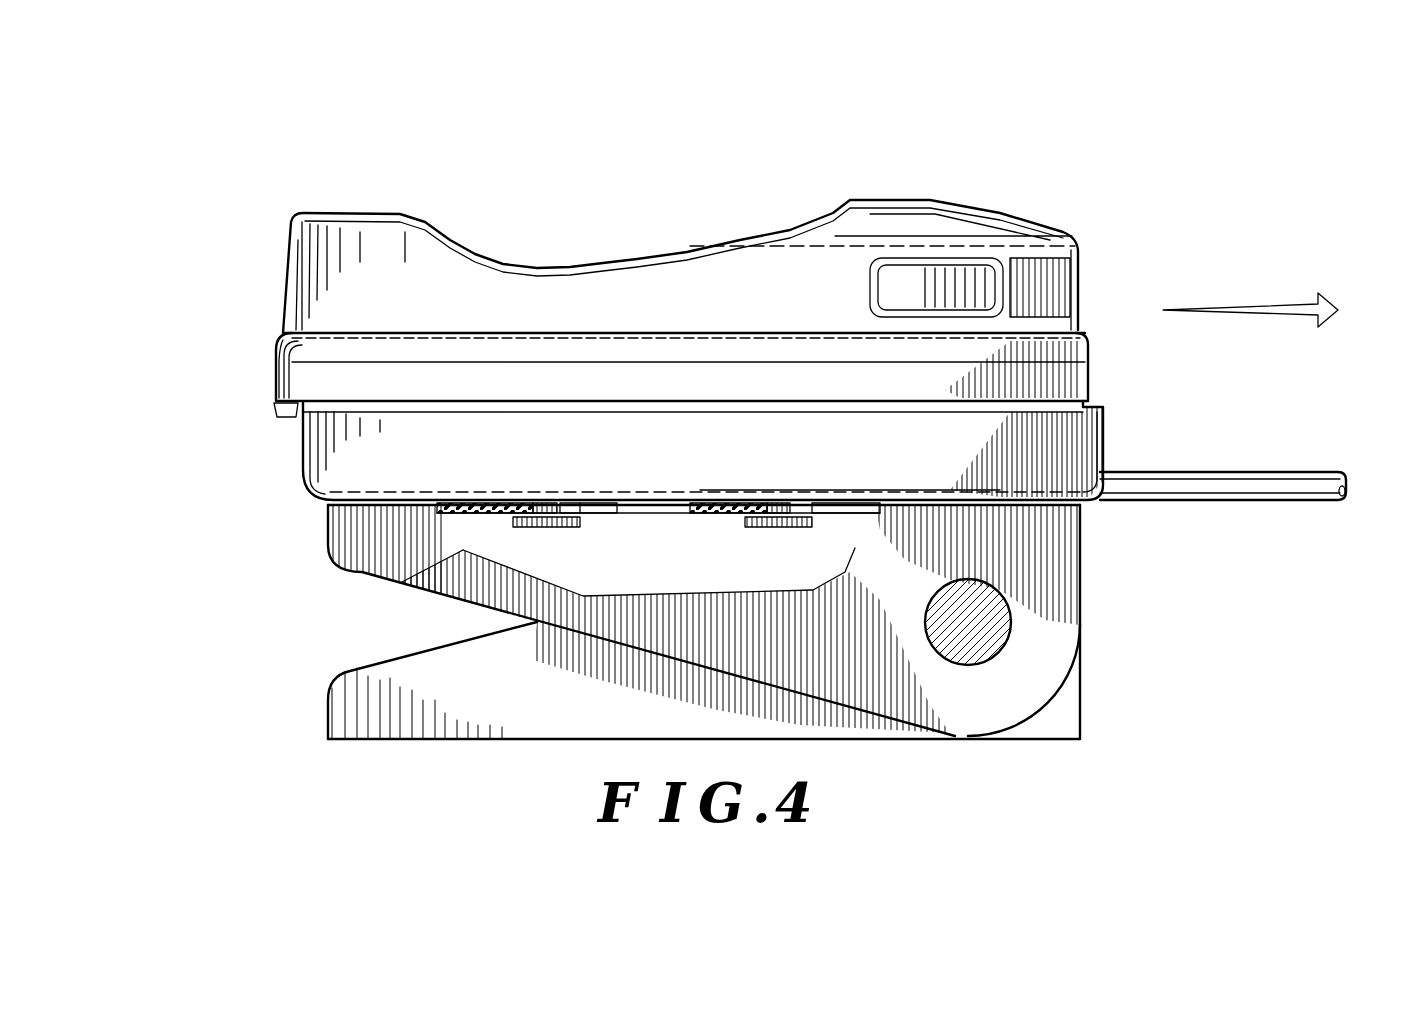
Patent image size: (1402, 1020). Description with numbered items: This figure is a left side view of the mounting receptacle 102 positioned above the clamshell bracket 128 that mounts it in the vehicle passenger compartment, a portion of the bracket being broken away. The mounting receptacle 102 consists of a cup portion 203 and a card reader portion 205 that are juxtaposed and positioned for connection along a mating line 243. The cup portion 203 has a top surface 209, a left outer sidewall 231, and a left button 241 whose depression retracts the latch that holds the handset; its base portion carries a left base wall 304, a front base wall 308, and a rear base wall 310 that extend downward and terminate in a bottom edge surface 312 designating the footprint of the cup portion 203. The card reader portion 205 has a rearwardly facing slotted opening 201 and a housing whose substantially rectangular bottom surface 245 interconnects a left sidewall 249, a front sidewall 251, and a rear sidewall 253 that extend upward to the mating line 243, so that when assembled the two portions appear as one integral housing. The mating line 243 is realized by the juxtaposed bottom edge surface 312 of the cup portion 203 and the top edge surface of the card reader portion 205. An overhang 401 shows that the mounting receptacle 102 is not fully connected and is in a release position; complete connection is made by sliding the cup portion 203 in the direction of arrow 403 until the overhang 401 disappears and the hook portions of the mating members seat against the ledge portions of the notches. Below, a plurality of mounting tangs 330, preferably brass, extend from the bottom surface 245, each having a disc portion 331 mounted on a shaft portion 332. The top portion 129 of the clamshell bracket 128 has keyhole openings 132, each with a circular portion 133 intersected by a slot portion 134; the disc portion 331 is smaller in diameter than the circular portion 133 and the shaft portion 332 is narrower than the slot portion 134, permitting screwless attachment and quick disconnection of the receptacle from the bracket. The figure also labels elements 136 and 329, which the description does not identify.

The mounting receptacle 102 is at (315, 198).
The clamshell bracket 128 is at (1112, 636).
The top portion 129 is at (468, 512).
The keyhole openings 132 is at (601, 503).
The circular portion 133 is at (612, 512).
The slot portion 134 is at (527, 510).
The cable 136 is at (1261, 503).
The slotted opening 201 is at (1095, 414).
The cup portion 203 is at (244, 276).
The card reader portion 205 is at (241, 483).
The top surface 209 is at (977, 207).
The left outer sidewall 231 is at (435, 277).
The left button 241 is at (950, 278).
The mating line 243 is at (630, 403).
The bottom surface 245 is at (447, 510).
The left sidewall 249 is at (785, 435).
The front sidewall 251 is at (302, 490).
The rear sidewall 253 is at (1105, 447).
The left base wall 304 is at (640, 378).
The front base wall 308 is at (282, 370).
The rear base wall 310 is at (1086, 358).
The bottom edge surface 312 is at (555, 392).
The pivot hole 329 is at (973, 405).
The mounting tangs 330 is at (525, 542).
The disc portion 331 is at (512, 521).
The shaft portion 332 is at (572, 500).
The overhang 401 is at (285, 418).
The arrow 403 is at (1277, 302).